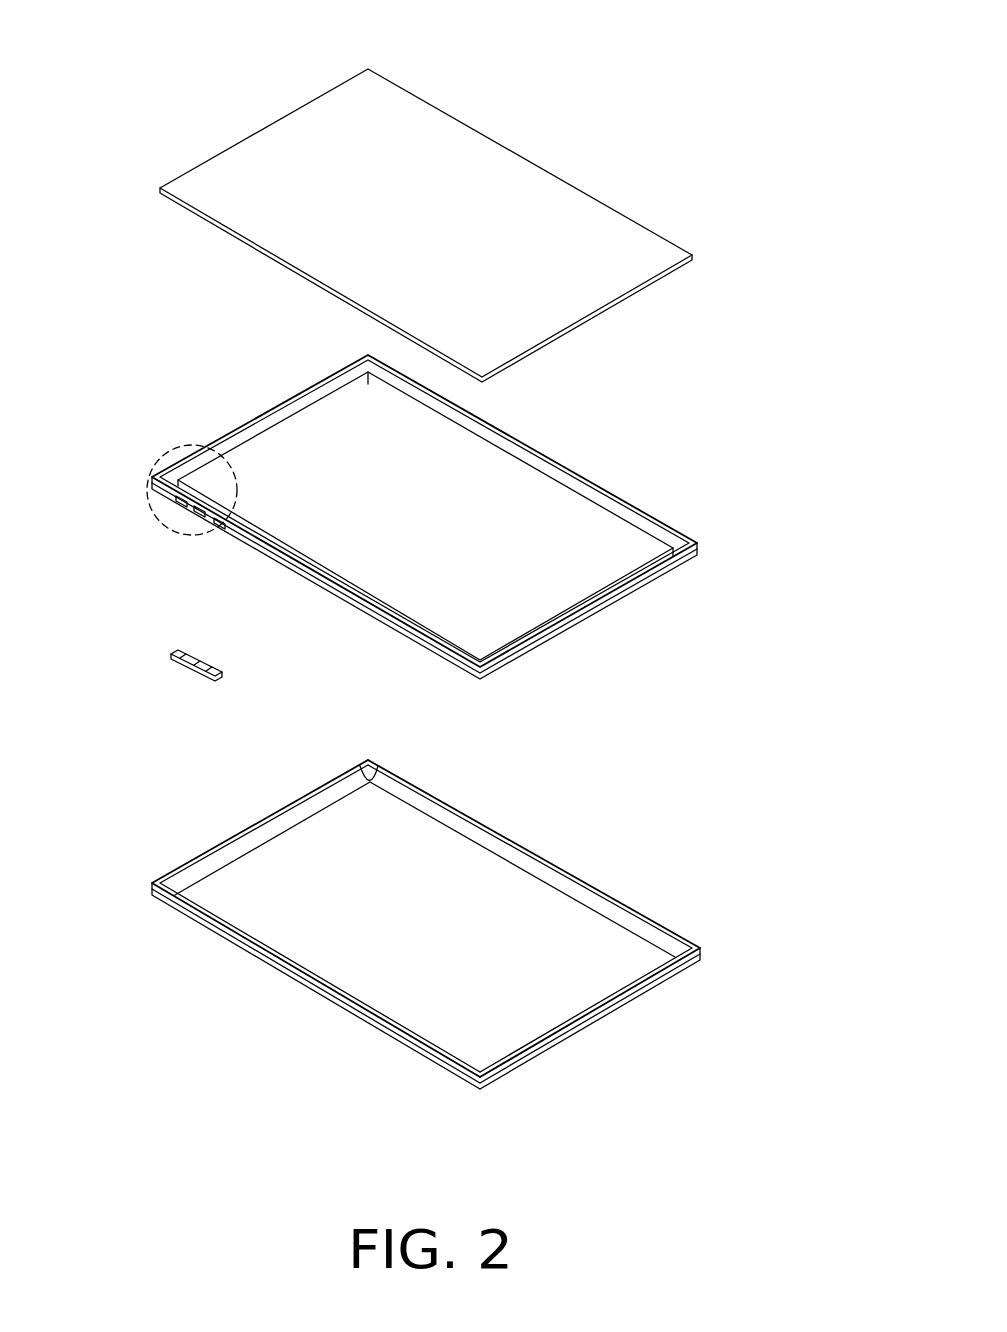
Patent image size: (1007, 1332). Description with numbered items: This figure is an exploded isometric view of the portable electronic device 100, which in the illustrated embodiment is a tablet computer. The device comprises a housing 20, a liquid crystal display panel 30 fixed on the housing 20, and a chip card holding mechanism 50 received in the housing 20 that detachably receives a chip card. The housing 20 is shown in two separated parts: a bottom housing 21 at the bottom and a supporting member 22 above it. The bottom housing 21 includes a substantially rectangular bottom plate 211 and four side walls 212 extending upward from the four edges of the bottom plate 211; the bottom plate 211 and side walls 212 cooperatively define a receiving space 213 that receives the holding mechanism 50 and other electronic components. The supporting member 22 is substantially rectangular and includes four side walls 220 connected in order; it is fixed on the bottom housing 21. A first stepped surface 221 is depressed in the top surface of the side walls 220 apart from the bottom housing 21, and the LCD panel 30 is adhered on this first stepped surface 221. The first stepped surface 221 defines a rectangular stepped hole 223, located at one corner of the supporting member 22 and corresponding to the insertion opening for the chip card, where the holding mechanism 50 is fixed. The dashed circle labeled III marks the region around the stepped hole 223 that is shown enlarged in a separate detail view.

The portable electronic device 100 is at (207, 83).
The housing 20 is at (727, 678).
The bottom housing 21 is at (583, 833).
The supporting member 22 is at (597, 655).
The liquid crystal display (LCD) panel 30 is at (548, 222).
The chip card holding mechanism 50 is at (183, 663).
The bottom plate 211 is at (345, 965).
The side walls 212 is at (220, 860).
The receiving space 213 is at (575, 999).
The side walls 220 is at (512, 430).
The first stepped surface 221 is at (605, 500).
The stepped hole 223 is at (190, 515).
The detail region III is at (153, 520).